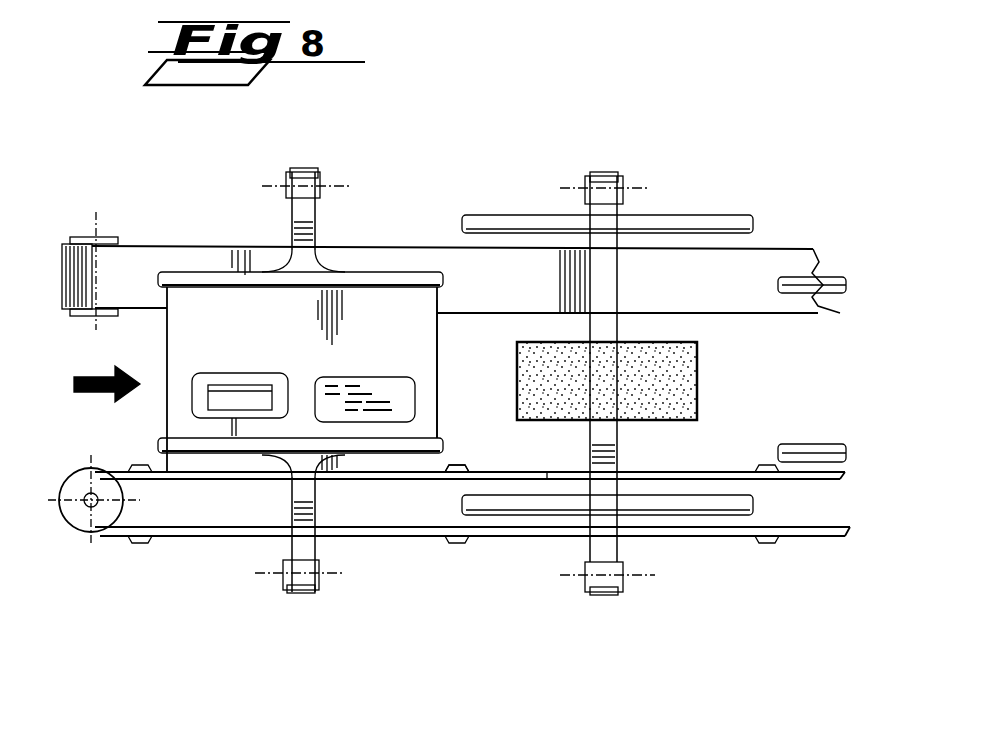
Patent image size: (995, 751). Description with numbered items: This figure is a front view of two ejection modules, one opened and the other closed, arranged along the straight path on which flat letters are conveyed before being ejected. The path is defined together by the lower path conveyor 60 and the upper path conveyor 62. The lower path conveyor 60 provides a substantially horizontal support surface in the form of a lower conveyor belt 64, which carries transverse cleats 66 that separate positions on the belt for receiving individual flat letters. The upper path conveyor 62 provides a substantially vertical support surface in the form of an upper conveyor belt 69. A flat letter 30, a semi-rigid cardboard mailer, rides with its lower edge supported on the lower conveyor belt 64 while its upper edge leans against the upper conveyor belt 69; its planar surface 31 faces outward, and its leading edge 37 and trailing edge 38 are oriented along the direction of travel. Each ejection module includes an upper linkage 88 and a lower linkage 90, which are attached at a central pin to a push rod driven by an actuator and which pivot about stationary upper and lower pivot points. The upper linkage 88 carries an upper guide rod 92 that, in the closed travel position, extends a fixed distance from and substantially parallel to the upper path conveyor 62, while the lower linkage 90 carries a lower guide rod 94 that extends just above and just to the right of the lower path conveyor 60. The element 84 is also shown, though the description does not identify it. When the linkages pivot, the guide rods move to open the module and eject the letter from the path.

The flat letter 30 is at (203, 338).
The planar surface 31 is at (410, 346).
The leading edge 37 is at (437, 370).
The trailing edge 38 is at (167, 407).
The lower path conveyor 60 is at (107, 548).
The upper path conveyor 62 is at (83, 226).
The lower conveyor belt 64 is at (547, 472).
The transverse cleats 66 is at (460, 470).
The upper conveyor belt 69 is at (777, 262).
The block 84 is at (697, 390).
The upper linkage 88 is at (308, 183).
The lower linkage 90 is at (308, 547).
The upper guide rod 92 is at (435, 278).
The lower guide rod 94 is at (423, 447).